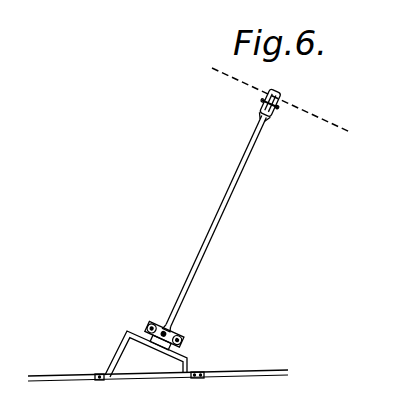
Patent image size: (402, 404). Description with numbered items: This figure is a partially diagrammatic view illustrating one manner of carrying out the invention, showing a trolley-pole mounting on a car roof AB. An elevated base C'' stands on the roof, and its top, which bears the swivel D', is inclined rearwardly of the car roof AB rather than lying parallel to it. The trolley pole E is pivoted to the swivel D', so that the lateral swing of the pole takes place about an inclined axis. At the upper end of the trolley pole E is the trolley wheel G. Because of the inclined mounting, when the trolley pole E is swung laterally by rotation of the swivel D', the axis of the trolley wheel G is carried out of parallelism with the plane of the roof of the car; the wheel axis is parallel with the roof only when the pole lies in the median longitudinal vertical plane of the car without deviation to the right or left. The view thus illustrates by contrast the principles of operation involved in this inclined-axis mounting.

The car roof A is at (84, 378).
The car roof B is at (228, 372).
The base C'' is at (137, 354).
The swivel D' is at (178, 341).
The trolley pole E is at (218, 213).
The trolley wheel G is at (262, 108).